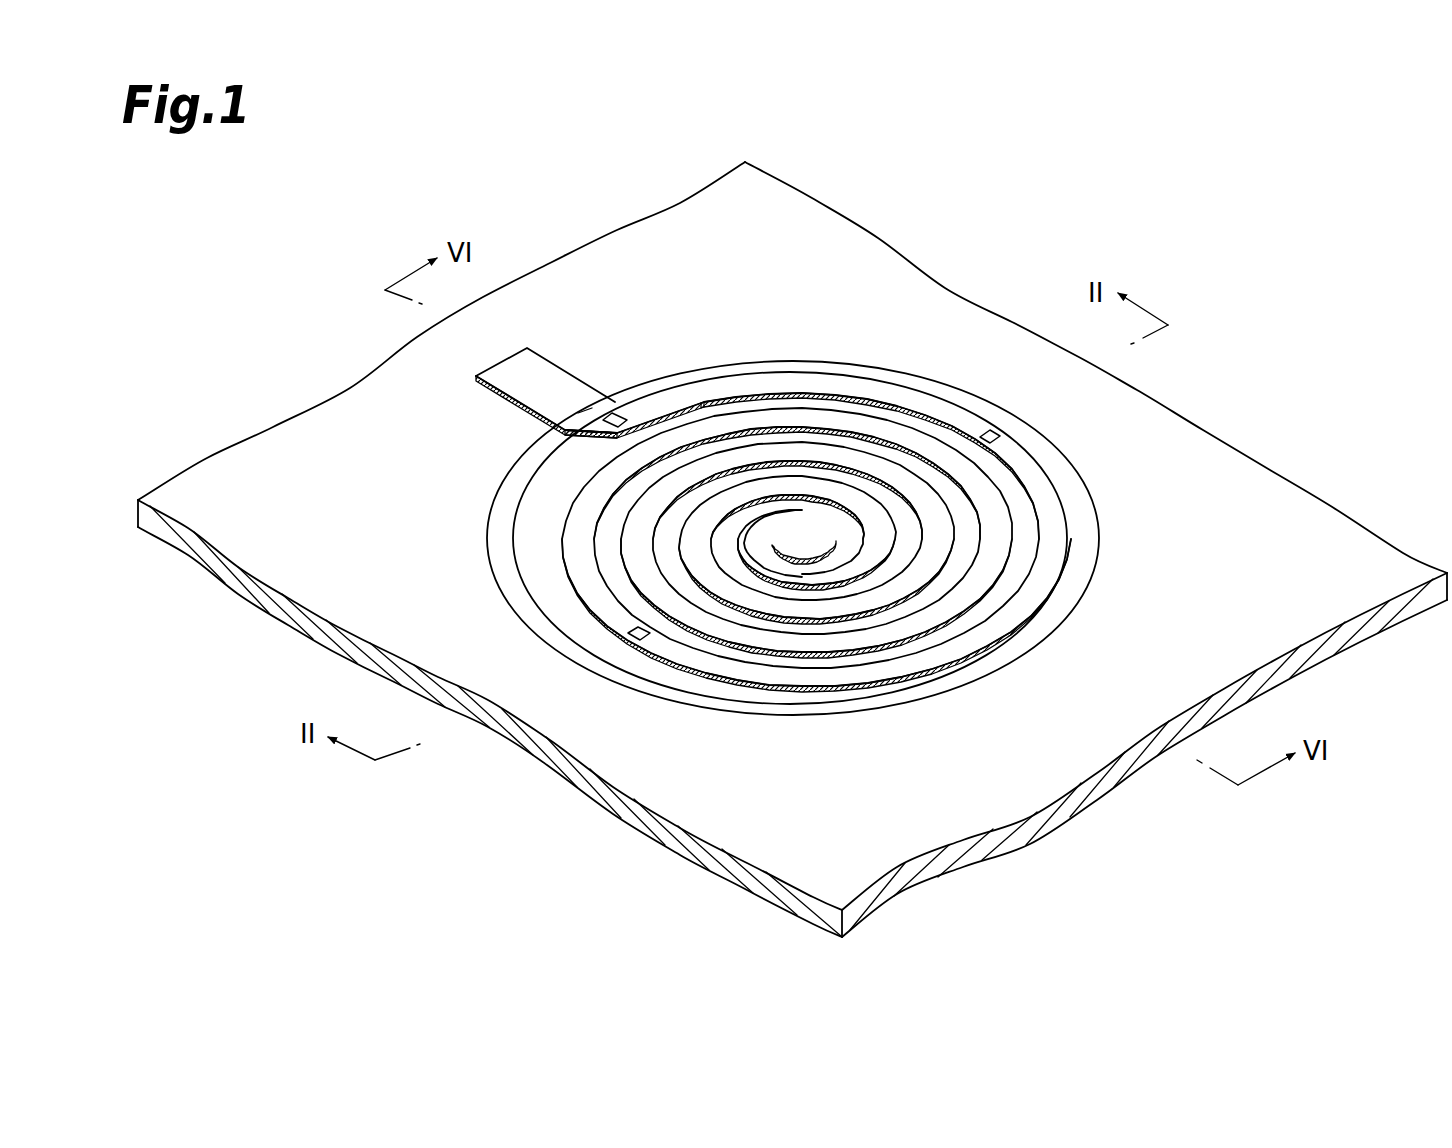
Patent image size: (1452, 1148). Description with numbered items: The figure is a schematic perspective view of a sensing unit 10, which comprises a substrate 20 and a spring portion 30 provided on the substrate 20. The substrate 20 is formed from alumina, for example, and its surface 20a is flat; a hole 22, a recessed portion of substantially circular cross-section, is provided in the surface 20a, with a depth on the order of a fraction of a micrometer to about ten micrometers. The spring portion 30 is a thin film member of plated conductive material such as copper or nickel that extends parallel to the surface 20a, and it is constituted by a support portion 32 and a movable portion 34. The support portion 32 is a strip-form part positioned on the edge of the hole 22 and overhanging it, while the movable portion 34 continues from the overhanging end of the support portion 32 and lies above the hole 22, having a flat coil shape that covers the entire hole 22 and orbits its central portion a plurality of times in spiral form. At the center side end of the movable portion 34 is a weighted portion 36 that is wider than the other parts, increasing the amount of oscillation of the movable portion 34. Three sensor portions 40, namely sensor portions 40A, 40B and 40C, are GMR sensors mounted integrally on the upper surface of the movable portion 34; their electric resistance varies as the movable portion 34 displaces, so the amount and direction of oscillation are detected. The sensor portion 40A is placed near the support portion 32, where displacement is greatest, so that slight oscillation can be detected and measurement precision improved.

The sensing unit 10 is at (1200, 208).
The substrate 20 is at (833, 255).
The surface 20a is at (640, 245).
The hole 22 is at (1088, 548).
The spring portion 30 is at (905, 390).
The support portion 32 is at (538, 372).
The movable portion 34 is at (592, 487).
The weighted portion 36 is at (800, 535).
The sensor portions 40 is at (816, 531).
The sensor portion 40A is at (614, 415).
The sensor portion 40B is at (636, 640).
The sensor portion 40C is at (992, 430).